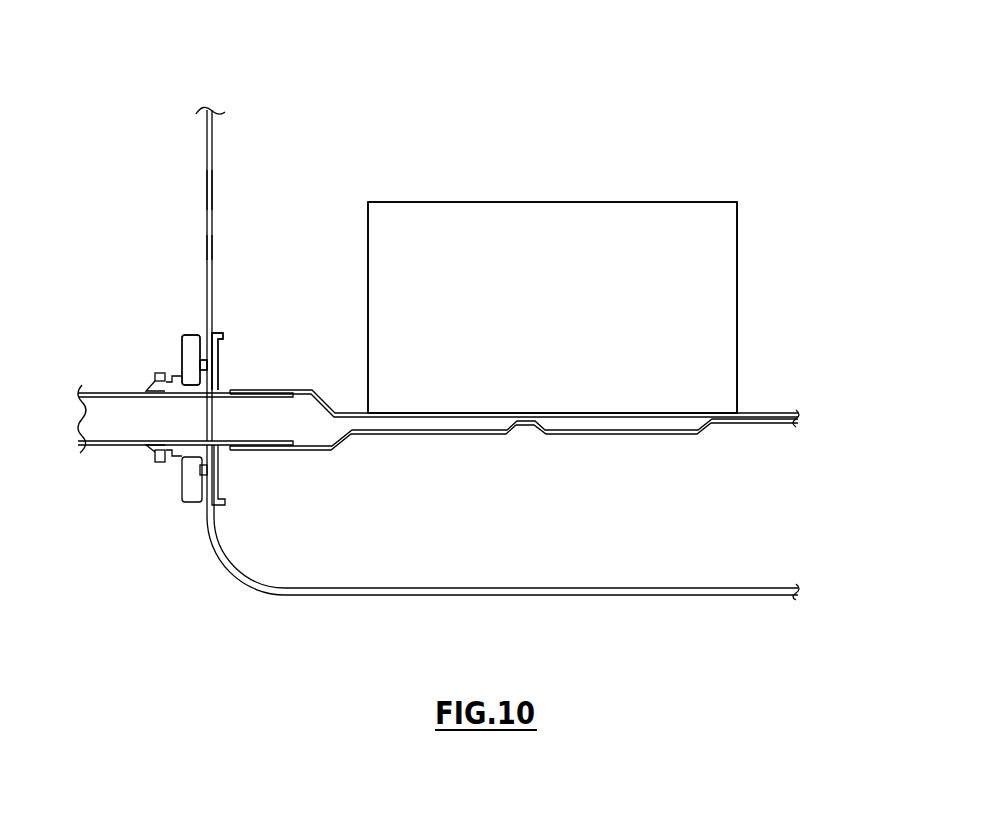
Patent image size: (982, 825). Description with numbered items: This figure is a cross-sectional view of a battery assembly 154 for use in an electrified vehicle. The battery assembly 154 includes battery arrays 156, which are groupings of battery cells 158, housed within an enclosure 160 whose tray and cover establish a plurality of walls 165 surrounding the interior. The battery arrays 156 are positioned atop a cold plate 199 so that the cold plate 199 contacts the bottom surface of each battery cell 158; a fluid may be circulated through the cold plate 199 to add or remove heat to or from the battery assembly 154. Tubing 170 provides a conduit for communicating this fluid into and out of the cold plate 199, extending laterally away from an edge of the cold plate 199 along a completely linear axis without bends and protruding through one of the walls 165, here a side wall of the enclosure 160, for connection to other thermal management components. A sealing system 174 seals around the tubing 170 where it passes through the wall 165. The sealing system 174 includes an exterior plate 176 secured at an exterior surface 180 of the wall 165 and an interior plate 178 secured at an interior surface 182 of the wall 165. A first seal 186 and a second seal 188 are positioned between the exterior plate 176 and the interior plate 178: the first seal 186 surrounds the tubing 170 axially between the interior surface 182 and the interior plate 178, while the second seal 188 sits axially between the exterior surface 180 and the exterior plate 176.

The battery assembly 154 is at (466, 80).
The battery arrays 156 is at (584, 170).
The battery cells 158 is at (576, 303).
The enclosure 160 is at (491, 605).
The walls 165 is at (199, 191).
The tubing 170 is at (113, 427).
The sealing system 174 is at (158, 329).
The exterior plate 176 is at (192, 340).
The interior plate 178 is at (222, 340).
The exterior surface 180 is at (207, 237).
The interior surface 182 is at (213, 249).
The first seal 186 is at (214, 375).
The second seal 188 is at (205, 470).
The cold plate 199 is at (437, 430).